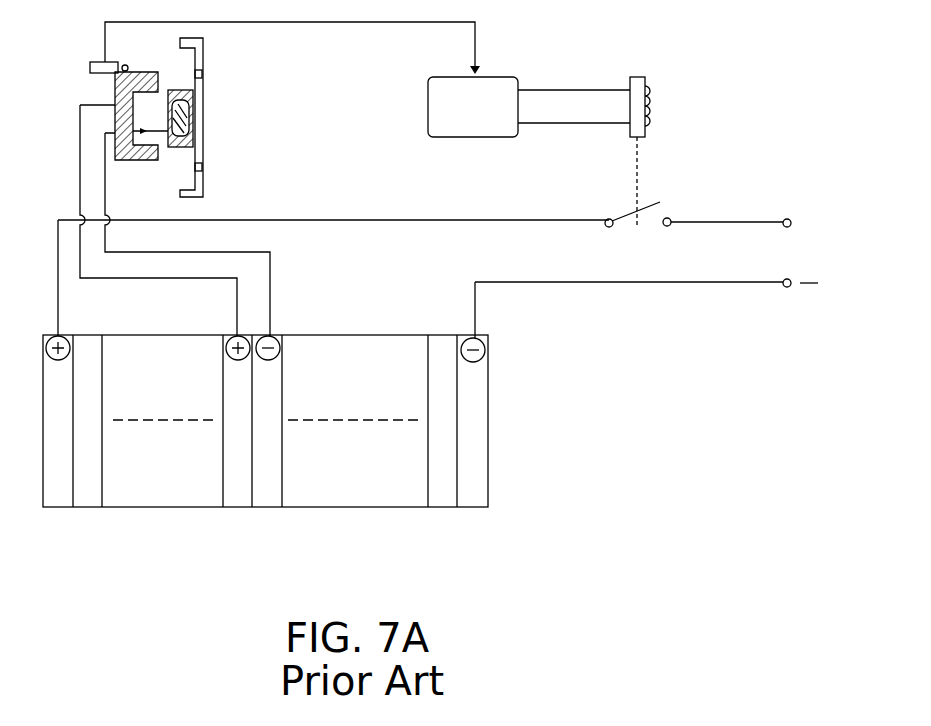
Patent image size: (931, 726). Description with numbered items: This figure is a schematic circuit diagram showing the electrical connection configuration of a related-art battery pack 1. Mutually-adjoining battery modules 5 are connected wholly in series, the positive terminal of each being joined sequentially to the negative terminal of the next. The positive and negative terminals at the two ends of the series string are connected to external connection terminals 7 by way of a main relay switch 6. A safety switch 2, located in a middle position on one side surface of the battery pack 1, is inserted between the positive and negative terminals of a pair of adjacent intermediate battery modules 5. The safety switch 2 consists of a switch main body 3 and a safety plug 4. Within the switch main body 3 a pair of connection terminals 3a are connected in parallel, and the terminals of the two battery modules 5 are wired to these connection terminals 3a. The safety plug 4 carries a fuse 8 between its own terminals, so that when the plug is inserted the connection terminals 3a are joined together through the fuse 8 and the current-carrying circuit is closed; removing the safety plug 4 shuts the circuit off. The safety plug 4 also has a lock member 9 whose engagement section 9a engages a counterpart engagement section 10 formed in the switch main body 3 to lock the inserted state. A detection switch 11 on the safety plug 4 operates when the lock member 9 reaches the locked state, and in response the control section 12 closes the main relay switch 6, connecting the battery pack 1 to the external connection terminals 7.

The battery pack 1 is at (203, 516).
The safety switch 2 is at (222, 68).
The switch main body 3 is at (115, 88).
The connection terminals 3a is at (130, 128).
The safety plug 4 is at (193, 91).
The battery modules 5 is at (90, 502).
The main relay switch 6 is at (659, 176).
The external connection terminals 7 is at (785, 280).
The fuse 8 is at (185, 117).
The lock member 9 is at (203, 45).
The engagement section 9a is at (180, 43).
The counterpart engagement section 10 is at (128, 160).
The detection switch 11 is at (92, 62).
The control section 12 is at (470, 137).